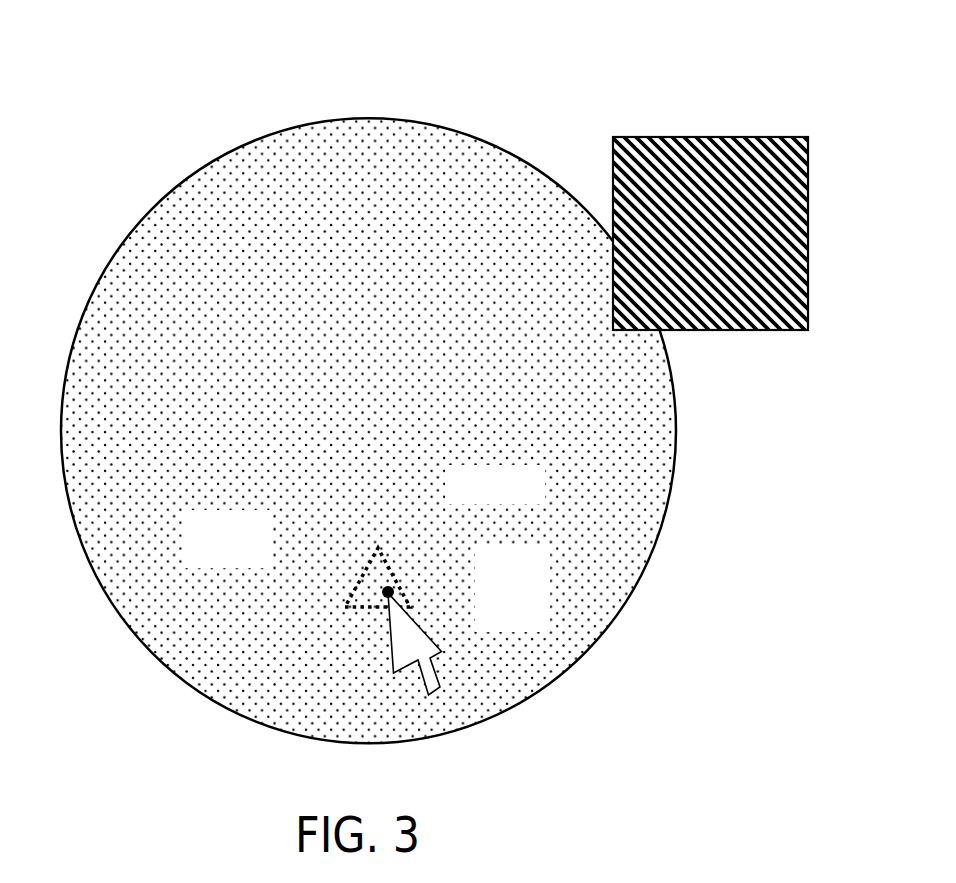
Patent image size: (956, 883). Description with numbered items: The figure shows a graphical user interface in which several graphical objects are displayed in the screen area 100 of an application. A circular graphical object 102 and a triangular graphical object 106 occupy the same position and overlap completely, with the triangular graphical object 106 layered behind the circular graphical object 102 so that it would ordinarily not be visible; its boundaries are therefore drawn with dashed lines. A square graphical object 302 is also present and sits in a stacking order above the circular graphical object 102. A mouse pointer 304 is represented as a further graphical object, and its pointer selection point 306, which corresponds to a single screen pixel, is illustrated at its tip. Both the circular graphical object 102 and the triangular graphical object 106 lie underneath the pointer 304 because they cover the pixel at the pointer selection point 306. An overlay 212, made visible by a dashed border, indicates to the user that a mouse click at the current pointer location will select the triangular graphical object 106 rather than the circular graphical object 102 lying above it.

The screen area 100 is at (508, 371).
The circular graphical object 102 is at (658, 432).
The triangular graphical object 106 is at (357, 535).
The overlay 212 is at (378, 547).
The square graphical object 302 is at (715, 158).
The pointer 304 is at (412, 636).
The pointer selection point 306 is at (395, 592).